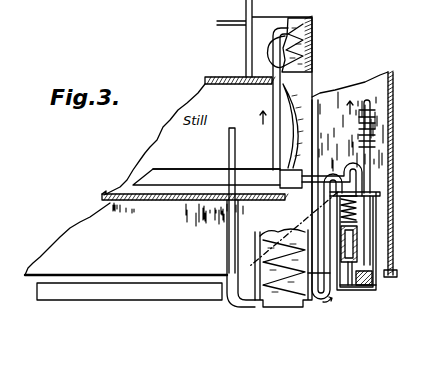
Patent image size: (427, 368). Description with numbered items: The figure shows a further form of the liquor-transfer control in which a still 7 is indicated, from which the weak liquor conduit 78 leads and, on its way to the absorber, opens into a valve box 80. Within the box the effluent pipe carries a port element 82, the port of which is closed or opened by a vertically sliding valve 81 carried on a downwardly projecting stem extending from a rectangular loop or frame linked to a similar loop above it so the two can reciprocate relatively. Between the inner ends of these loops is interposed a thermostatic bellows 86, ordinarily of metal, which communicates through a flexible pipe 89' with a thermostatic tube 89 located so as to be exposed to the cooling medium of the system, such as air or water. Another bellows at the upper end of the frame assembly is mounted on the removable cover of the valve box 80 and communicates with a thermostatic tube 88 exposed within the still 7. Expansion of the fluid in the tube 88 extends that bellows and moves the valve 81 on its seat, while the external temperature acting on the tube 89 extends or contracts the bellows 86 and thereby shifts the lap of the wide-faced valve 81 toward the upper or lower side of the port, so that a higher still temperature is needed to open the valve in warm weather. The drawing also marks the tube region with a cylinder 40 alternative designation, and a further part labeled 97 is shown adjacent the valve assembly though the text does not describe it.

The still 7 is at (211, 77).
The weak liquor conduit 78 is at (278, 102).
The thermostatic tube 88 is at (186, 178).
The elongated cylinder 40 is at (160, 178).
The thermostatic tube 89 is at (129, 304).
The spring 97 is at (352, 206).
The flexible pipe 89' is at (375, 241).
The thermostatic bellows 86 is at (356, 252).
The valve box 80 is at (372, 287).
The vertically sliding valve 81 is at (351, 289).
The port element 82 is at (364, 291).